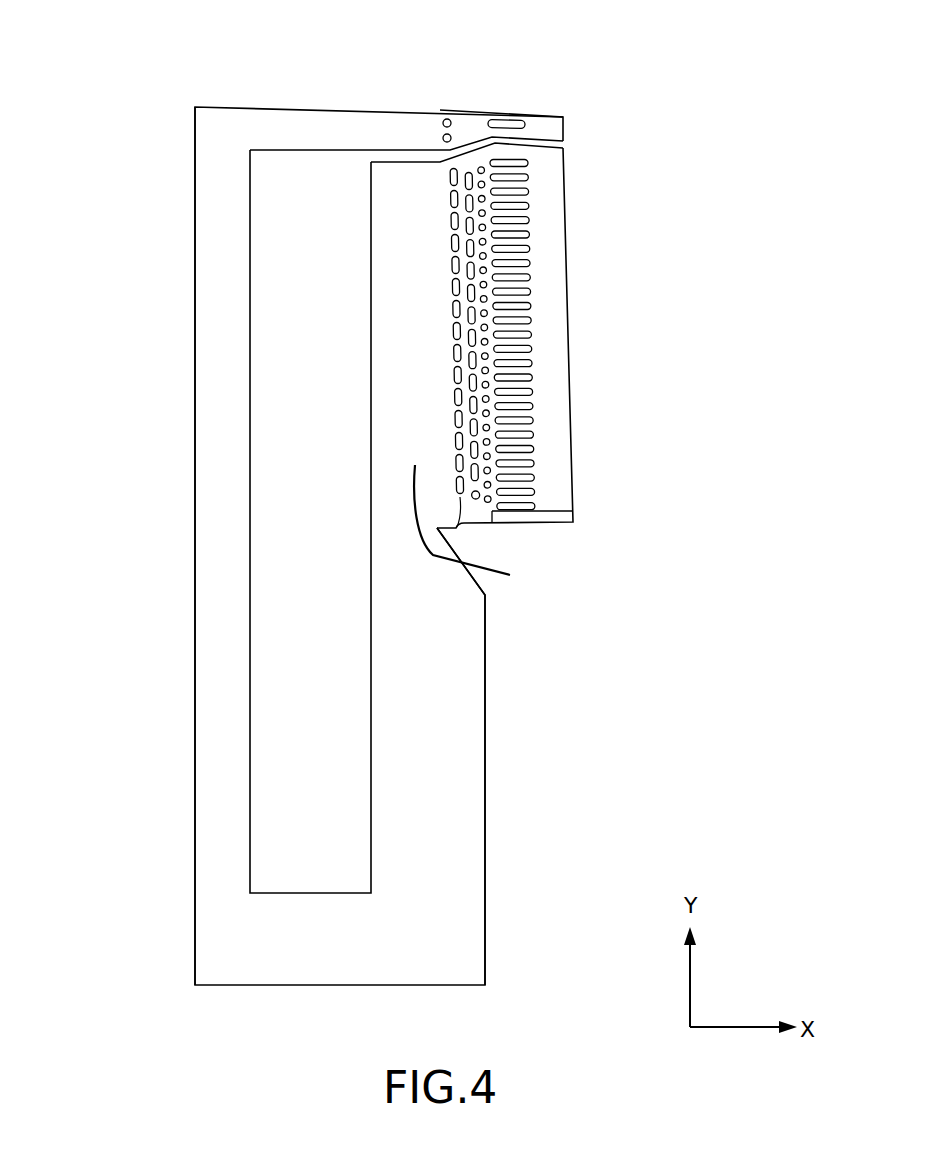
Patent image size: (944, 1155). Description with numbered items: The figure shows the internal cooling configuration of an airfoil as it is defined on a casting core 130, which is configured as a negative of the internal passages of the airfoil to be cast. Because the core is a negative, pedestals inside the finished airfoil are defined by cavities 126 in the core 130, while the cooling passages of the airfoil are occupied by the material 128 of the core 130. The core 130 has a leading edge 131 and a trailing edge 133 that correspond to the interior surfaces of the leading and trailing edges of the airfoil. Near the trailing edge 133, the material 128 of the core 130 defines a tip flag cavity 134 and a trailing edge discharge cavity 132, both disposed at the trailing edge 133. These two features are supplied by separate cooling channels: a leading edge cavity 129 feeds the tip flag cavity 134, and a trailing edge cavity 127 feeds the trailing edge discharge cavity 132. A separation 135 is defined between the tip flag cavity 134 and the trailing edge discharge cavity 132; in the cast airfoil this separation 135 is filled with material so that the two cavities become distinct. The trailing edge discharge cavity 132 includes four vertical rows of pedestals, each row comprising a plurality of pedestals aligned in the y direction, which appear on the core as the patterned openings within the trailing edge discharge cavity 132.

The cavities 126 is at (284, 167).
The trailing edge cavity 127 is at (481, 530).
The material 128 is at (302, 123).
The leading edge cavity 129 is at (393, 125).
The core 130 is at (161, 57).
The leading edge 131 is at (197, 462).
The trailing edge discharge cavity 132 is at (548, 193).
The trailing edge 133 is at (485, 717).
The tip flag cavity 134 is at (545, 127).
The separation 135 is at (543, 142).